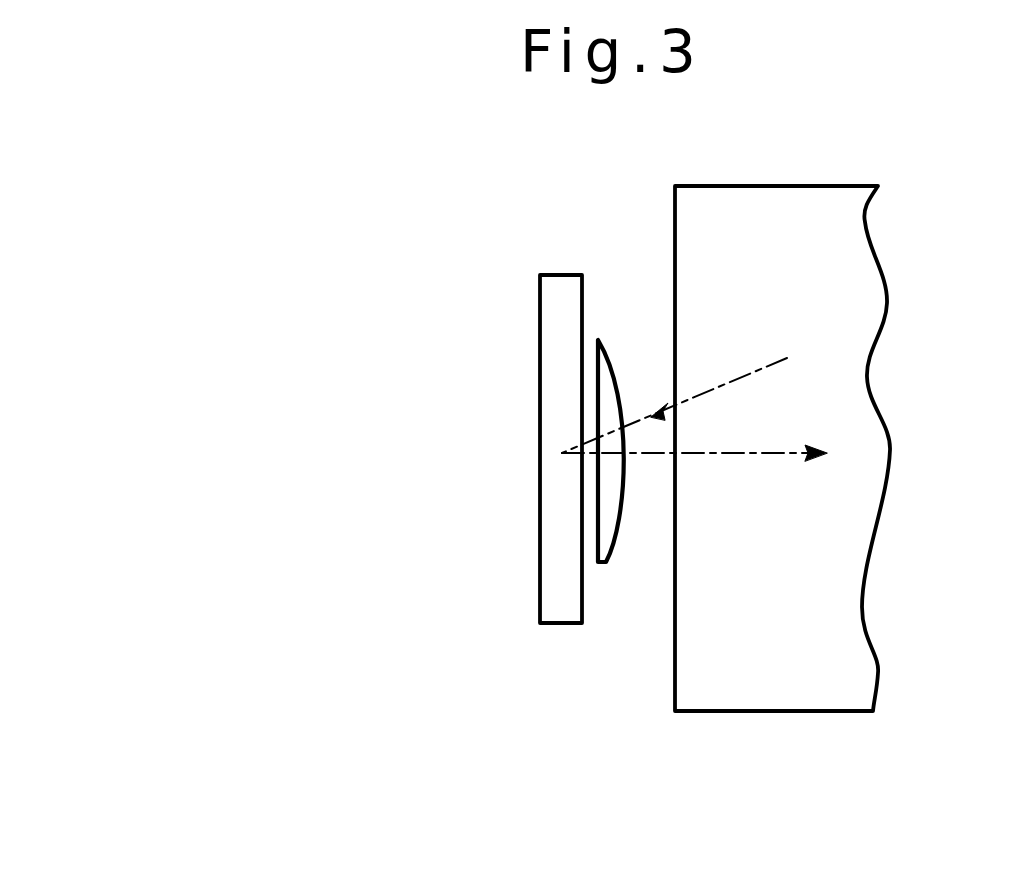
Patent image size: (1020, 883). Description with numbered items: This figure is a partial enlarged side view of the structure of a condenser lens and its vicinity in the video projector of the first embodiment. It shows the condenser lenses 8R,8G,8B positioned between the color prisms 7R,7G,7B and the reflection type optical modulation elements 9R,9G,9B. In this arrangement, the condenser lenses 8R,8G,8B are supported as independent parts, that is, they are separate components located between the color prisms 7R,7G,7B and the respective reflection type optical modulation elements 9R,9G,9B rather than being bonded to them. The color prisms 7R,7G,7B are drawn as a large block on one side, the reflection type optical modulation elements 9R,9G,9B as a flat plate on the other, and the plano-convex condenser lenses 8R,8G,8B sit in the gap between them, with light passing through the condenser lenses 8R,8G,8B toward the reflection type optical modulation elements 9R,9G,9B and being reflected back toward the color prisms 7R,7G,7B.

The color prisms 7R,7G,7B is at (692, 230).
The reflection type optical modulation elements 9R,9G,9B is at (553, 490).
The condenser lenses 8R,8G,8B is at (608, 563).